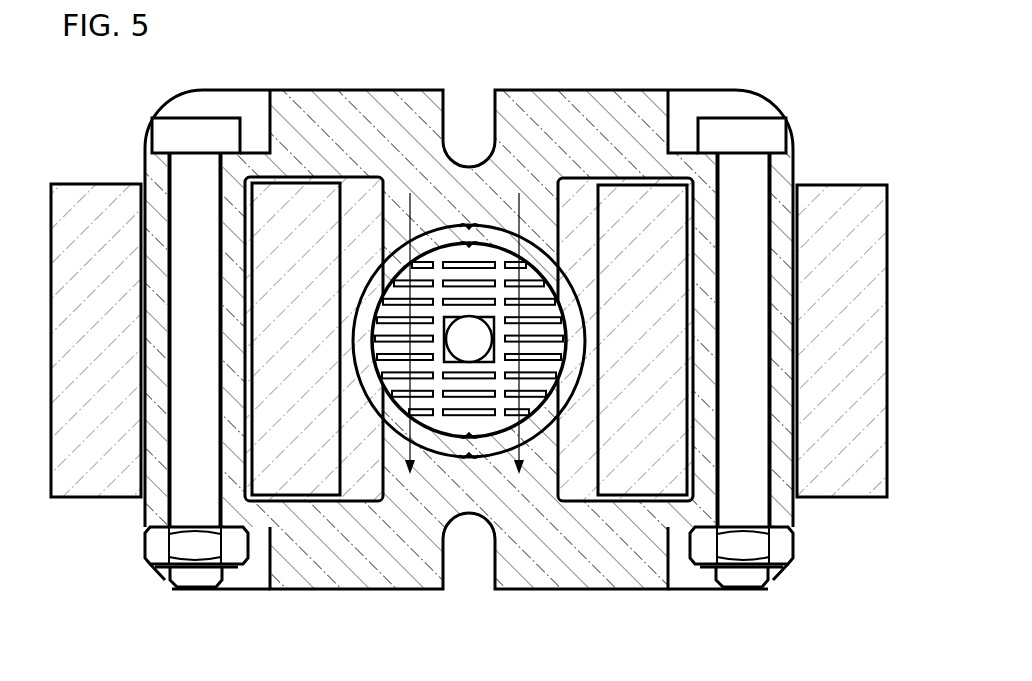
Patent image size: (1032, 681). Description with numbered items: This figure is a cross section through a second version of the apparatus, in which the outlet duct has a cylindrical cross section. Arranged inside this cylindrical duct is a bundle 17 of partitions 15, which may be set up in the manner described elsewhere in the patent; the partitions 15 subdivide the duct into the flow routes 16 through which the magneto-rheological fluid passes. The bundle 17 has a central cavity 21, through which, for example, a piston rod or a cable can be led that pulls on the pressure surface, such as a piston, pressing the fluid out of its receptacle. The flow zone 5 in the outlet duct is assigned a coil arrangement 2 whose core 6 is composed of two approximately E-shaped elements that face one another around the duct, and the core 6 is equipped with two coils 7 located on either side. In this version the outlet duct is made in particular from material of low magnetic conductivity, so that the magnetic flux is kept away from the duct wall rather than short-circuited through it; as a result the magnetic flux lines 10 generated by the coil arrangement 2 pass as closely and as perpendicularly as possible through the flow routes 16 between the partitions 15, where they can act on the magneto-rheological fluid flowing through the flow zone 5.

The coil arrangement 2 is at (150, 519).
The flow zone 5 is at (543, 257).
The core 6 is at (322, 112).
The coils 7 is at (107, 203).
The magnetic flux lines 10 is at (520, 474).
The partitions 15 is at (457, 354).
The flow routes 16 is at (453, 397).
The bundle 17 is at (498, 260).
The central cavity 21 is at (469, 346).